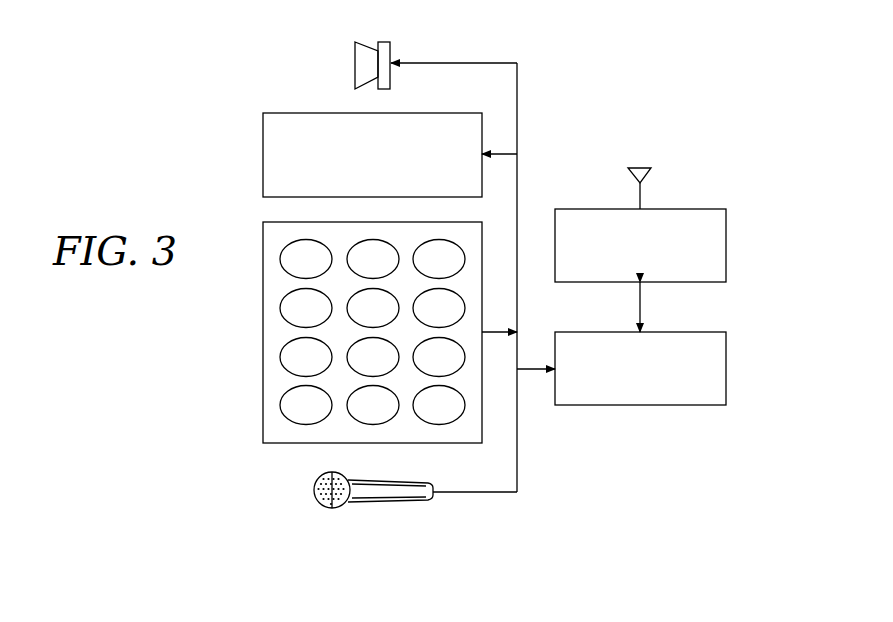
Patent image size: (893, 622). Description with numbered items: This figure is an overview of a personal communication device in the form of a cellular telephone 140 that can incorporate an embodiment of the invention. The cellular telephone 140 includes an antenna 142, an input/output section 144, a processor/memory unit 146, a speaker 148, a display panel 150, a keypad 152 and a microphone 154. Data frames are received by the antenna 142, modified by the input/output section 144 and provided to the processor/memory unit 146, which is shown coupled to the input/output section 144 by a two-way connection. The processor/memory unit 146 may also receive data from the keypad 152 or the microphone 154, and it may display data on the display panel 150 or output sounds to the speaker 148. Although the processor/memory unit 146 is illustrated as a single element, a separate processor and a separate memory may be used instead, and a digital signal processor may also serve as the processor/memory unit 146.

The cellular telephone 140 is at (592, 54).
The antenna 142 is at (645, 168).
The input/output section 144 is at (700, 209).
The processor/memory unit 146 is at (640, 405).
The speaker 148 is at (355, 63).
The display panel 150 is at (263, 156).
The keypad 152 is at (263, 332).
The microphone 154 is at (315, 490).